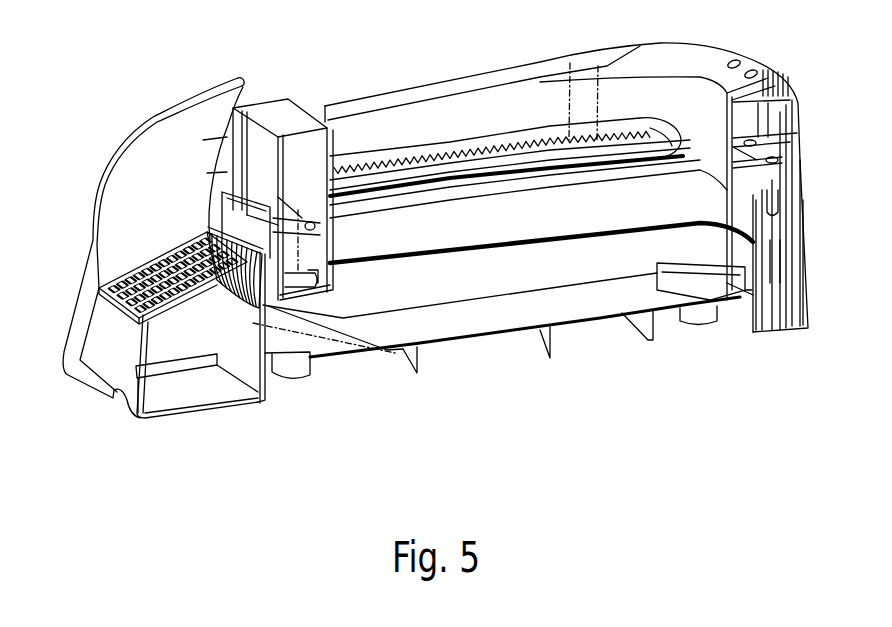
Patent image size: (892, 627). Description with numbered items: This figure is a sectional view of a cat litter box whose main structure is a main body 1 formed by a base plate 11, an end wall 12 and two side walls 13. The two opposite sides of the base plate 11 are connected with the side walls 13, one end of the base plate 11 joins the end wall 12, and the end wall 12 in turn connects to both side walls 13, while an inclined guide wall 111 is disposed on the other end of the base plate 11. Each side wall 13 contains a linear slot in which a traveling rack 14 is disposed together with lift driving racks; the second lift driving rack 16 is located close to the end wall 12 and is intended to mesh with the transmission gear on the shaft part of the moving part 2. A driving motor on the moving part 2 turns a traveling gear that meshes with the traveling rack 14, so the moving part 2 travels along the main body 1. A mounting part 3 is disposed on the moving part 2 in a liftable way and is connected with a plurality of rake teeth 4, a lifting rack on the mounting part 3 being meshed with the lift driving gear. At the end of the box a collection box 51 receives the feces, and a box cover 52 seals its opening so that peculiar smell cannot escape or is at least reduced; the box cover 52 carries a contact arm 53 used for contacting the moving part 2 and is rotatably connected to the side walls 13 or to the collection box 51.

The main body 1 is at (530, 219).
The moving part 2 is at (261, 112).
The mounting part 3 is at (255, 137).
The rake teeth 4 is at (276, 345).
The base plate 11 is at (540, 333).
The end wall 12 is at (732, 80).
The side walls 13 is at (537, 92).
The traveling rack 14 is at (400, 160).
The second lift driving rack 16 is at (567, 62).
The collection box 51 is at (262, 398).
The box cover 52 is at (170, 300).
The contact arm 53 is at (172, 123).
The inclined guide wall 111 is at (340, 328).